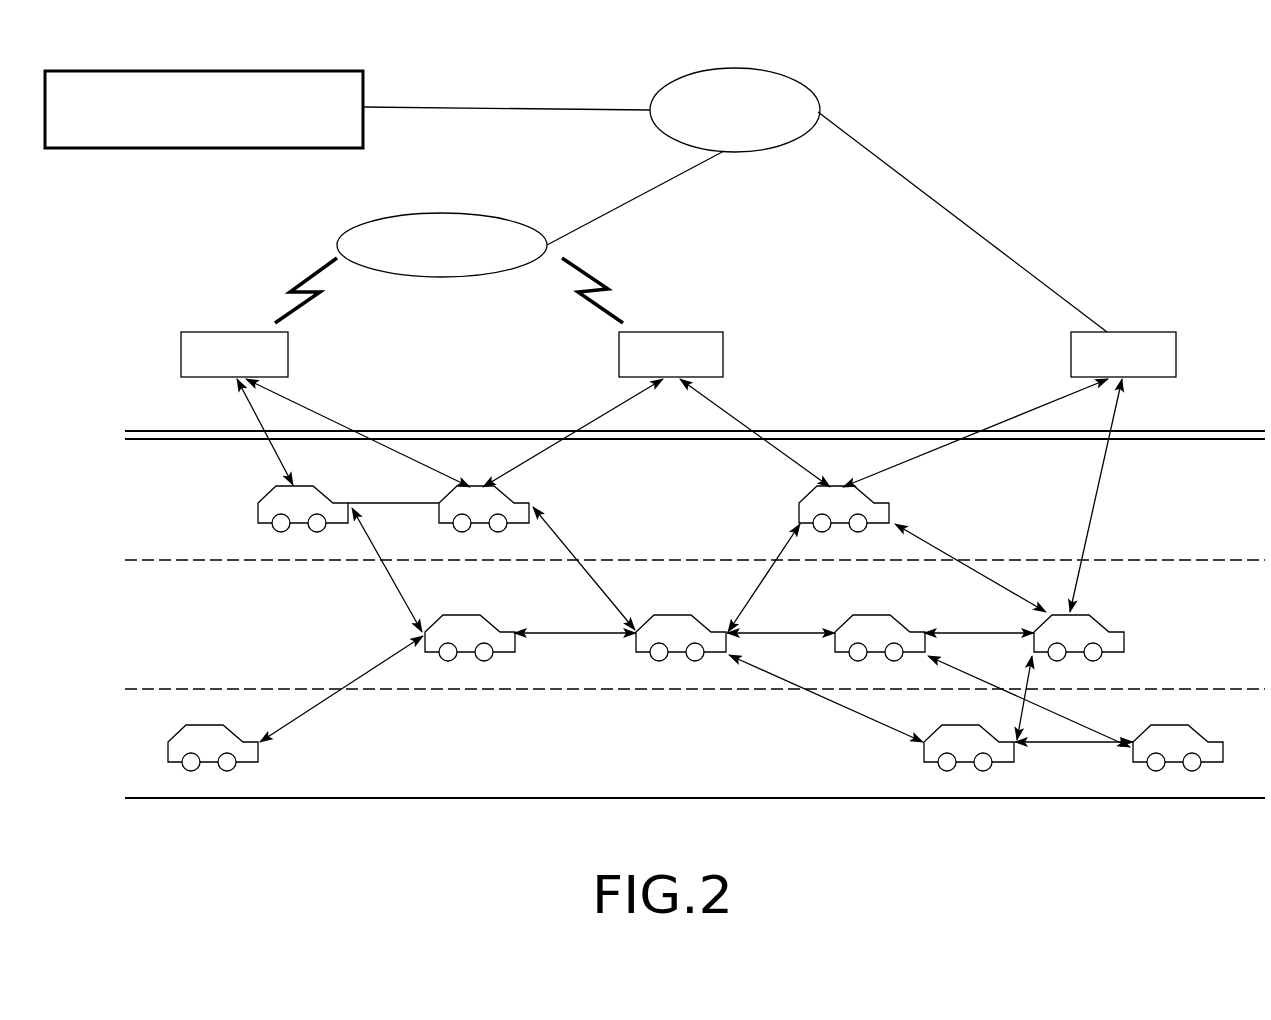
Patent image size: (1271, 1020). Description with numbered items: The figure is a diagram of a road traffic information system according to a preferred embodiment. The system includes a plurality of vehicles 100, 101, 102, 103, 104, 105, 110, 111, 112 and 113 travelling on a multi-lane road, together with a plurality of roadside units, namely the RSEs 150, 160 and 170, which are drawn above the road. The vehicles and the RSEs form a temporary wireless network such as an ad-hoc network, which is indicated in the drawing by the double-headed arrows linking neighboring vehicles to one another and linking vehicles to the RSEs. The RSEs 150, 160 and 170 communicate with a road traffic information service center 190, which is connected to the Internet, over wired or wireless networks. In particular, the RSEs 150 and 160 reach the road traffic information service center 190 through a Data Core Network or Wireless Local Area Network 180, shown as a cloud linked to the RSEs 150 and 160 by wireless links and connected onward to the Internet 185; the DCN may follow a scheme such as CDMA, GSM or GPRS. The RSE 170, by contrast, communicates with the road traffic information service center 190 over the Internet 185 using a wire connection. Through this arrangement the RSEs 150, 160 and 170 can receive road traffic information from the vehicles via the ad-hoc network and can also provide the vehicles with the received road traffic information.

The road traffic information service center 190 is at (218, 71).
The Internet 185 is at (733, 68).
The Data Core Network or Wireless Local Area Network 180 is at (441, 214).
The RSE 160 is at (234, 354).
The RSE 150 is at (671, 354).
The RSE 170 is at (1123, 354).
The vehicle 100 is at (681, 638).
The vehicle 101 is at (880, 638).
The vehicle 102 is at (844, 509).
The vehicle 103 is at (969, 748).
The vehicle 104 is at (1079, 638).
The vehicle 105 is at (1178, 748).
The vehicle 110 is at (470, 638).
The vehicle 111 is at (484, 509).
The vehicle 112 is at (303, 509).
The vehicle 113 is at (213, 748).